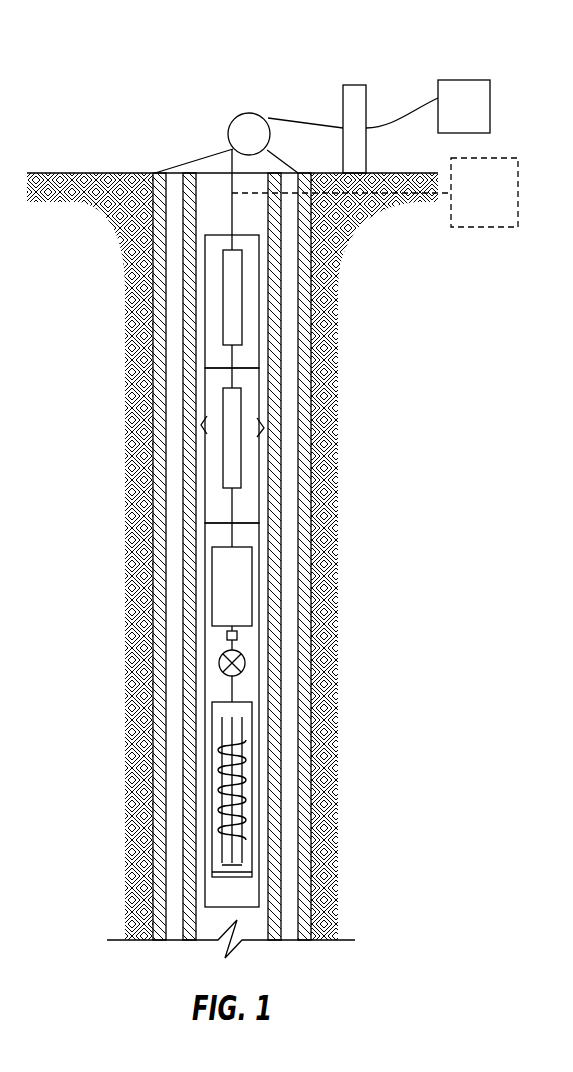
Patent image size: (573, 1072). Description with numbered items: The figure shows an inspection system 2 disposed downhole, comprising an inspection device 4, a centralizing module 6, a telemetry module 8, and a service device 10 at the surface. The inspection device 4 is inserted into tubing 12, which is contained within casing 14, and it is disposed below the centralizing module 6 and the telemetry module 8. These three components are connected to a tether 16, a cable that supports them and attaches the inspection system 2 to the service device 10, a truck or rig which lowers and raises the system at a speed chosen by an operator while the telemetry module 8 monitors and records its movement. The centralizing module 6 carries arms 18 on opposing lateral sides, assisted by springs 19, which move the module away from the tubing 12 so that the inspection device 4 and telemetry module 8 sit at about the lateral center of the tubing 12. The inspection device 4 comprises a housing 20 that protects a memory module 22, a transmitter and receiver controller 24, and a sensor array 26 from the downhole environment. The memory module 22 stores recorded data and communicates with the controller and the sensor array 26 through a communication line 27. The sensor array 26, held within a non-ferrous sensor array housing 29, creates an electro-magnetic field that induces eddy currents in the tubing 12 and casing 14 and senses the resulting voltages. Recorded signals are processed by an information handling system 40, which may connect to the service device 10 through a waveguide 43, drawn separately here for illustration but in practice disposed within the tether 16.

The inspection system 2 is at (93, 78).
The inspection device 4 is at (262, 637).
The centralizing module 6 is at (222, 400).
The telemetry module 8 is at (242, 298).
The service device 10 is at (315, 75).
The tubing 12 is at (183, 290).
The casing 14 is at (152, 350).
The tether 16 is at (233, 500).
The arms 18 is at (262, 427).
The springs 19 is at (203, 425).
The housing 20 is at (203, 540).
The memory module 22 is at (212, 583).
The transmitter and receiver controller 24 is at (219, 663).
The sensor array 26 is at (222, 733).
The communication line 27 is at (233, 690).
The sensor array housing 29 is at (240, 880).
The information handling system 40 is at (450, 120).
The waveguide 43 is at (470, 205).